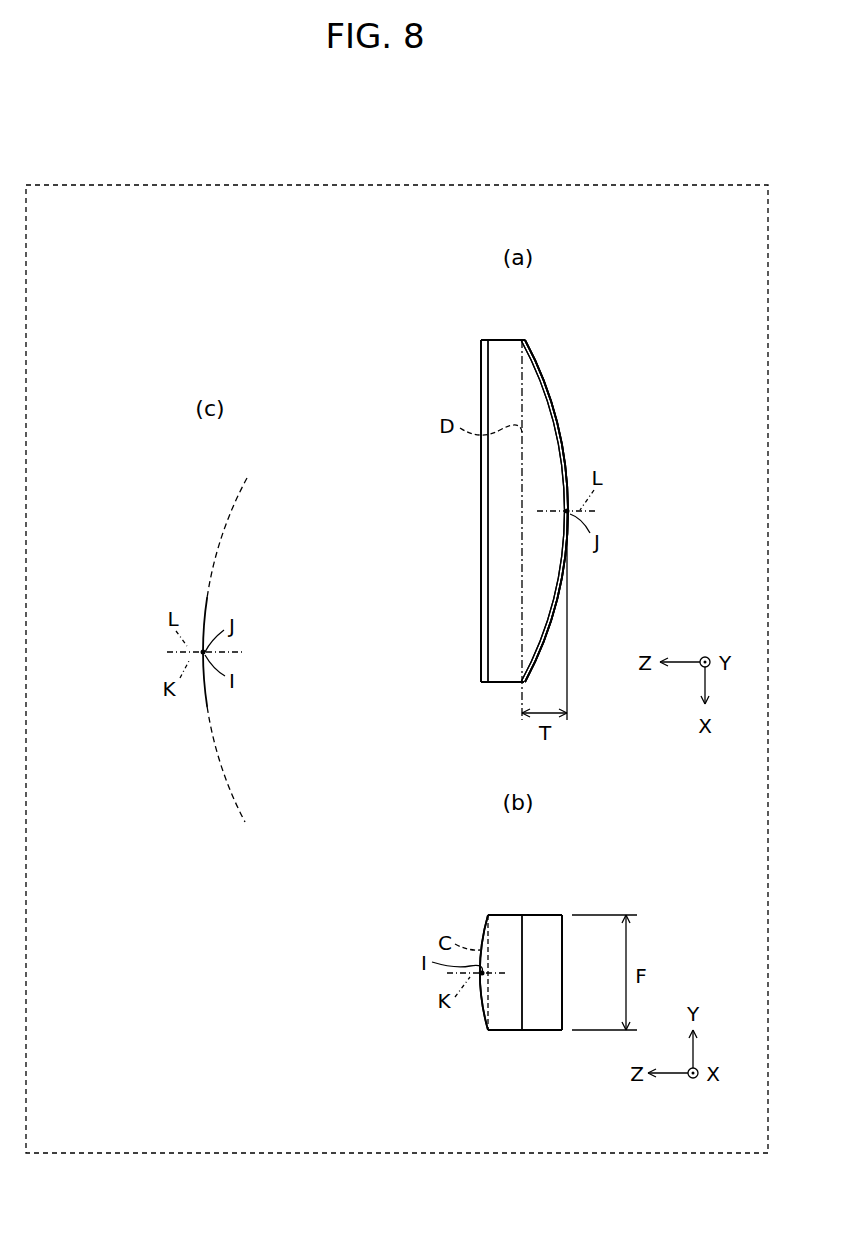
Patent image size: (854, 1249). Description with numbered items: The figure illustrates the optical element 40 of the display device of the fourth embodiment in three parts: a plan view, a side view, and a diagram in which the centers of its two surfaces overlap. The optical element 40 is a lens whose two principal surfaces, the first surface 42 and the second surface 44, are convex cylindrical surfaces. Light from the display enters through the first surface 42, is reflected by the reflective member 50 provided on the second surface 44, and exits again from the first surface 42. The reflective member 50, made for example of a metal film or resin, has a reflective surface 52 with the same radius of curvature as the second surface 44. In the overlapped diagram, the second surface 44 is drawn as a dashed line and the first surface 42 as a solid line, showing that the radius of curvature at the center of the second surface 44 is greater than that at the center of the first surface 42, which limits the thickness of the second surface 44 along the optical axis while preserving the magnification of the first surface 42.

The optical element 40 is at (481, 586).
The first surface 42 is at (481, 514).
The second surface 44 is at (552, 390).
The reflective member 50 is at (566, 448).
The reflective surface 52 is at (550, 427).